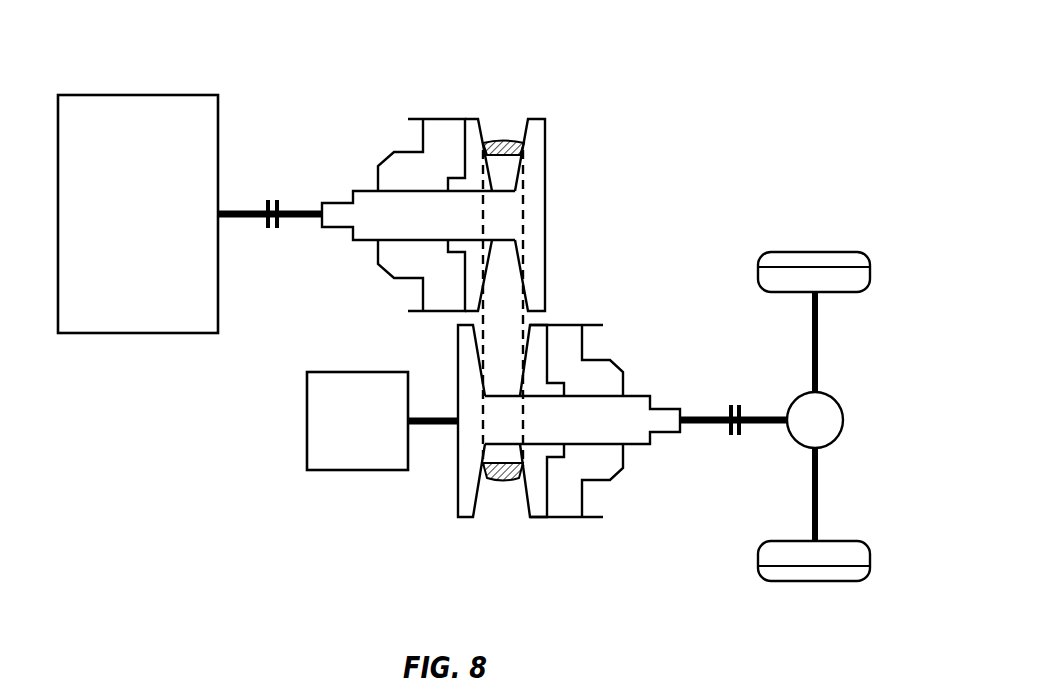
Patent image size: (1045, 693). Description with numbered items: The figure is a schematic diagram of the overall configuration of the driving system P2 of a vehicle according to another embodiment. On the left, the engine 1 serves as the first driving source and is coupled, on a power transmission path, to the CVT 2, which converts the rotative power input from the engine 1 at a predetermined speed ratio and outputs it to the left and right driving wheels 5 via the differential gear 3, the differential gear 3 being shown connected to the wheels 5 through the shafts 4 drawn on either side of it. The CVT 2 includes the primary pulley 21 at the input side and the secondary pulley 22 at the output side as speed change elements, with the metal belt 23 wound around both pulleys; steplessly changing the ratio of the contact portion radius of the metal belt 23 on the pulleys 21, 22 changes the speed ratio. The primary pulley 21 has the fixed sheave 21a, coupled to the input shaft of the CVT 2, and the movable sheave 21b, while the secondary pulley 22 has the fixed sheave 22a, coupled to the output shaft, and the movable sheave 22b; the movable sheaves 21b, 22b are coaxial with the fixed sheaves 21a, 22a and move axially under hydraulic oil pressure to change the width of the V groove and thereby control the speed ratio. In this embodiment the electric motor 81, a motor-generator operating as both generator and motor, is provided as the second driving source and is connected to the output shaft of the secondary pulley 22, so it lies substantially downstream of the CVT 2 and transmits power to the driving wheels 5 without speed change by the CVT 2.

The engine 1 is at (145, 95).
The CVT 2 is at (398, 100).
The primary pulley 21 is at (383, 162).
The fixed sheave 21a is at (545, 118).
The movable sheave 21b is at (467, 118).
The secondary pulley 22 is at (622, 477).
The fixed sheave 22a is at (463, 520).
The movable sheave 22b is at (537, 520).
The metal belt 23 is at (513, 141).
The differential gear 3 is at (843, 420).
The drive shaft 4 is at (818, 347).
The driving wheels 5 is at (870, 272).
The electric motor 81 is at (345, 472).
The driving system P2 is at (717, 90).